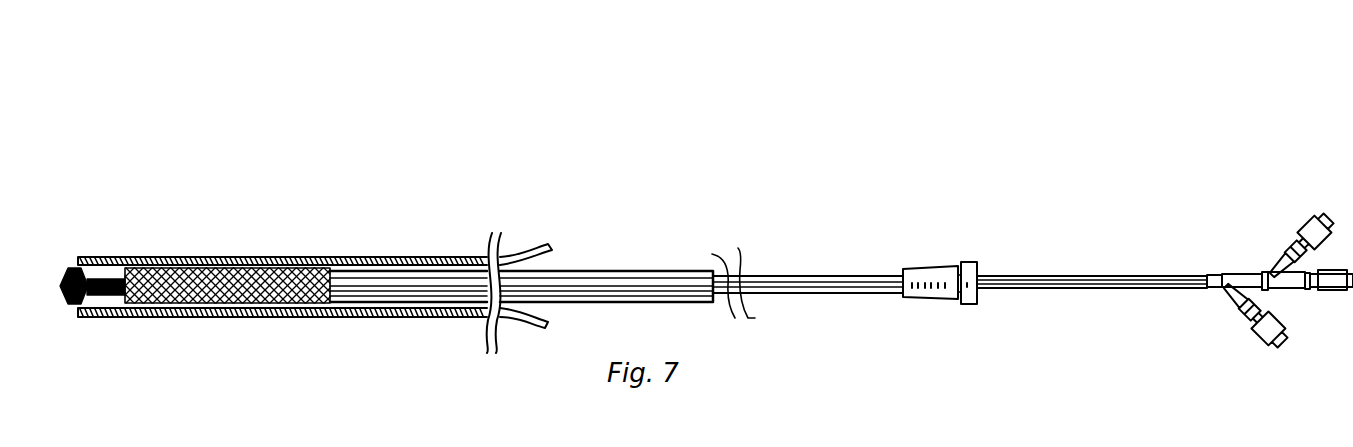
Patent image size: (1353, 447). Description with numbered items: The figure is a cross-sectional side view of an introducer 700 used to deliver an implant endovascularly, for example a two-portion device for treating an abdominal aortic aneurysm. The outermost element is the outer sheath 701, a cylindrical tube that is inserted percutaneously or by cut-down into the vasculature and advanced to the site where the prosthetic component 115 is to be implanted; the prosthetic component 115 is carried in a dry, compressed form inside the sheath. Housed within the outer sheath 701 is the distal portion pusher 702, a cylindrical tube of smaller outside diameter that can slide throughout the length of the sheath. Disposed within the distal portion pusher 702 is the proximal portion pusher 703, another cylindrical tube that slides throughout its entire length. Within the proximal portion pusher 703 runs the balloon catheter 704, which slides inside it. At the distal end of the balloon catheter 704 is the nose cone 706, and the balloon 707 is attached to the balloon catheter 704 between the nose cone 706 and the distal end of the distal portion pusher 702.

The introducer 700 is at (752, 132).
The prosthetic component 115 is at (186, 268).
The balloon 707 is at (112, 270).
The nose cone 706 is at (68, 305).
The outer sheath 701 is at (356, 318).
The distal portion pusher 702 is at (621, 267).
The proximal portion pusher 703 is at (820, 273).
The balloon catheter 704 is at (1110, 275).